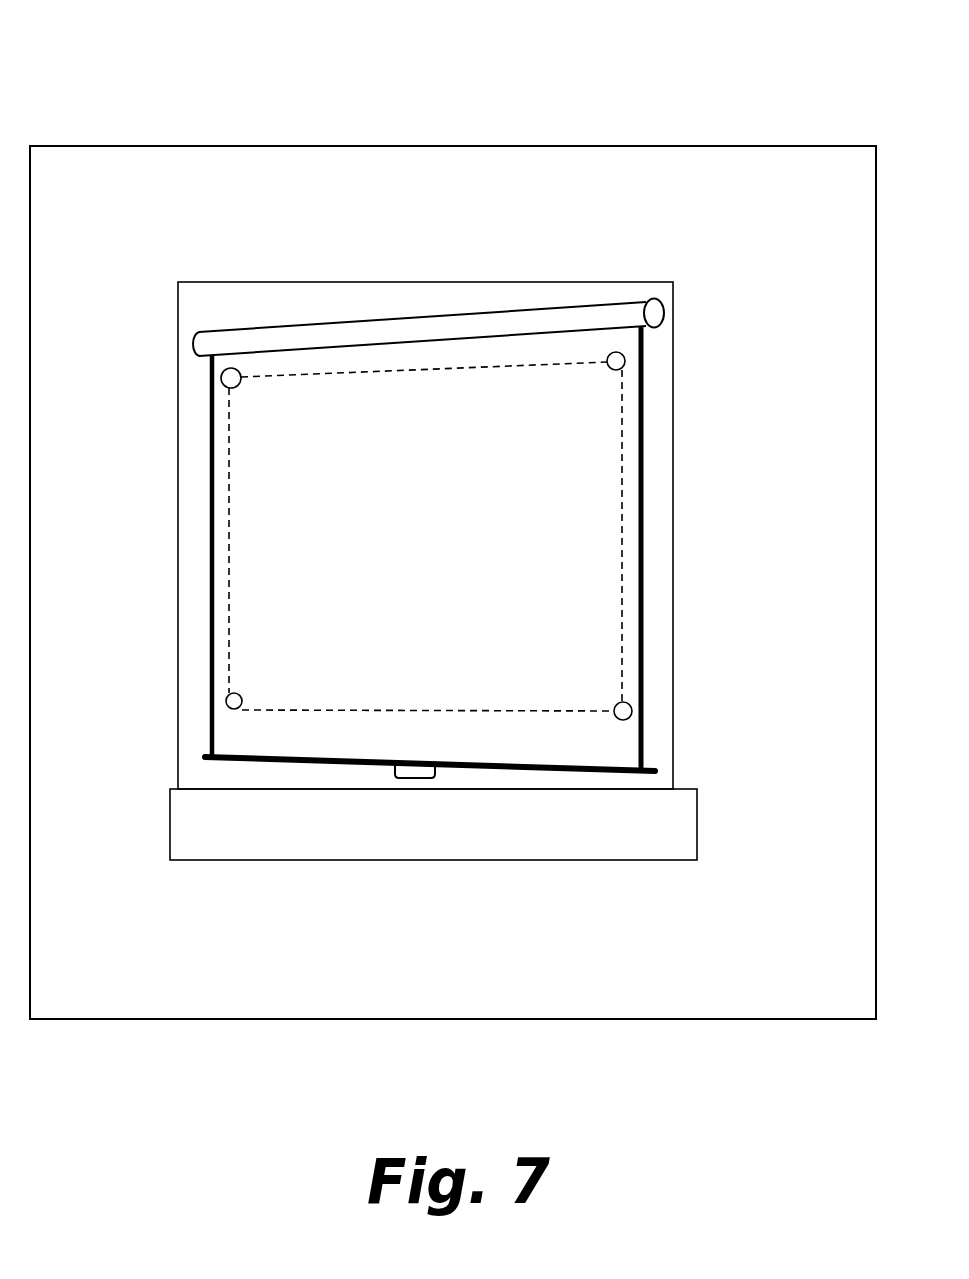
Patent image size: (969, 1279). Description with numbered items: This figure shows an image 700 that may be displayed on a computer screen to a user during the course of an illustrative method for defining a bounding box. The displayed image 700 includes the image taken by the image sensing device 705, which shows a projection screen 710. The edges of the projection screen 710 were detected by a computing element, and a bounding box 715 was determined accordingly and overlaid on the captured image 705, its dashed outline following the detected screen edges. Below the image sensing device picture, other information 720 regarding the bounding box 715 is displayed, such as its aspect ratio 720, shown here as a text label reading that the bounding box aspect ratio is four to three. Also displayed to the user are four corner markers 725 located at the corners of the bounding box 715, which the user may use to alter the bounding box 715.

The image 700 is at (121, 110).
The image taken by the image sensing device 705 is at (572, 282).
The projection screen 710 is at (630, 345).
The bounding box 715 is at (232, 546).
The other information regarding the bounding box 720 is at (250, 836).
The corner markers 725 is at (233, 368).